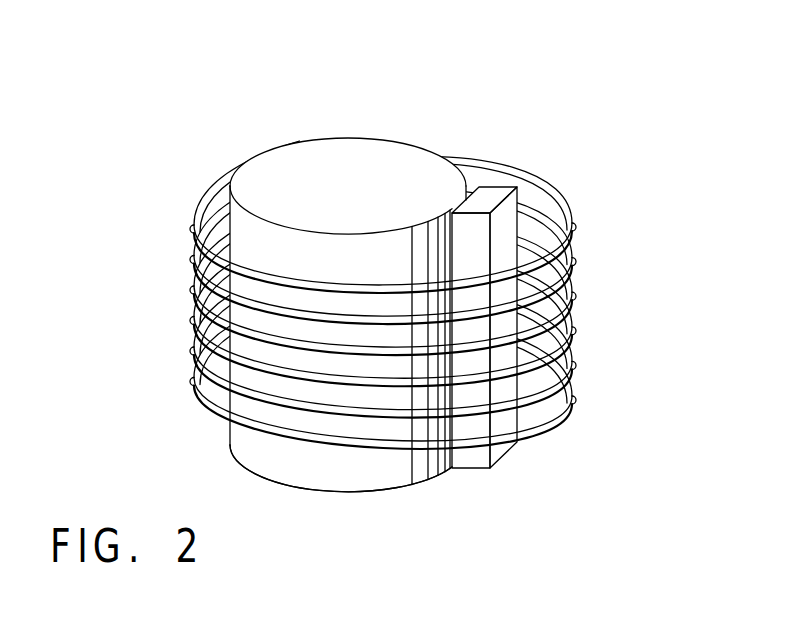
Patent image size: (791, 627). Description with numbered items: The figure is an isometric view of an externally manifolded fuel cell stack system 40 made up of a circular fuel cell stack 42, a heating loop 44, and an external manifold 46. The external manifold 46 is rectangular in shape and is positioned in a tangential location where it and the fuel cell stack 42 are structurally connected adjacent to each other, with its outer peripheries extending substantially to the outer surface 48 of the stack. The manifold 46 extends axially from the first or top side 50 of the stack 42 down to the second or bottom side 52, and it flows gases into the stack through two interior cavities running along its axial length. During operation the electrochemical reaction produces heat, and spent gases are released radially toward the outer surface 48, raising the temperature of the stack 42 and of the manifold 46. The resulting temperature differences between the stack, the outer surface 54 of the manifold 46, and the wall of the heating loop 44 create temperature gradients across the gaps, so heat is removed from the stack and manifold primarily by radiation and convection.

The externally manifolded fuel cell stack system 40 is at (543, 83).
The circular fuel cell stack 42 is at (280, 146).
The heating loop 44 is at (570, 279).
The external manifold 46 is at (488, 198).
The outer surface of the fuel cell stack 48 is at (259, 254).
The first or top side of the stack 50 is at (342, 172).
The second or bottom side of the fuel cell stack 52 is at (333, 492).
The outer surface of the manifold 54 is at (508, 236).